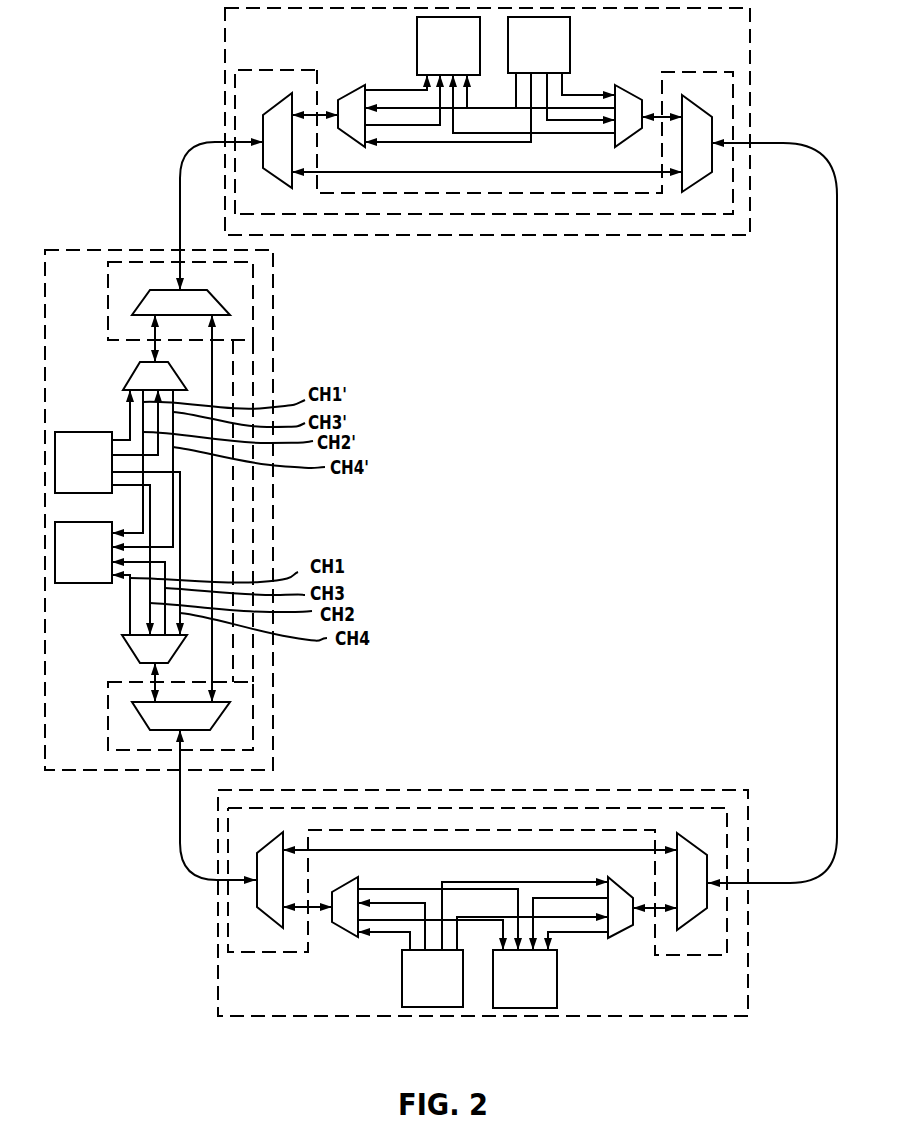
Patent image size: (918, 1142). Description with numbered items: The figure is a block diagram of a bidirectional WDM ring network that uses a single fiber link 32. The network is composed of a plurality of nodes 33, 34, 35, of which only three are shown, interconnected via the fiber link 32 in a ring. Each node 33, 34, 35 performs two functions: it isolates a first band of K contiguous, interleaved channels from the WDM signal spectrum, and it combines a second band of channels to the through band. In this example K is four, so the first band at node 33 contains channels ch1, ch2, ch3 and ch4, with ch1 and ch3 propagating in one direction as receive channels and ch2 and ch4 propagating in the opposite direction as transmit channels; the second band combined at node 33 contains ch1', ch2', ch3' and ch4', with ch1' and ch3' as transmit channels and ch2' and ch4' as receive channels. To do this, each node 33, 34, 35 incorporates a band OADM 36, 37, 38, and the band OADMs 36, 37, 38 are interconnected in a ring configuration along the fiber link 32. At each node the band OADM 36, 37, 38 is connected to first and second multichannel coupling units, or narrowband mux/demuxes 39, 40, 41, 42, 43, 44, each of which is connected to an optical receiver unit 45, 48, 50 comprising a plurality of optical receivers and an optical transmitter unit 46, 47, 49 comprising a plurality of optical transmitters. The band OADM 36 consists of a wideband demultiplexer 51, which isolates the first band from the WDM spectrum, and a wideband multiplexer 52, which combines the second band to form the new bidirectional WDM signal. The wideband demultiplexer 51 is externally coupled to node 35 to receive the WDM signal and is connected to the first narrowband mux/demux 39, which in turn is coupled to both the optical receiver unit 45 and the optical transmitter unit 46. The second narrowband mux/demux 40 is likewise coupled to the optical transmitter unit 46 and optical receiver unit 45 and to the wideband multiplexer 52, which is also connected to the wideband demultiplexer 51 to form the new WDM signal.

The fiber link 32 is at (837, 344).
The node 33 is at (55, 768).
The node 34 is at (725, 39).
The node 35 is at (722, 1010).
The band OADM 36 is at (253, 298).
The band OADM 37 is at (270, 70).
The band OADM 38 is at (636, 808).
The first narrowband mux/demux 39 is at (146, 661).
The second narrowband mux/demux 40 is at (146, 388).
The narrowband mux/demux 41 is at (343, 127).
The narrowband mux/demux 42 is at (620, 127).
The narrowband mux/demux 43 is at (613, 918).
The narrowband mux/demux 44 is at (337, 918).
The optical receiver unit 45 is at (73, 576).
The optical transmitter unit 46 is at (73, 486).
The optical transmitter unit 47 is at (528, 69).
The optical receiver unit 48 is at (437, 70).
The optical transmitter unit 49 is at (421, 1002).
The optical receiver unit 50 is at (514, 1002).
The wideband demultiplexer 51 is at (171, 728).
The wideband multiplexer 52 is at (171, 313).